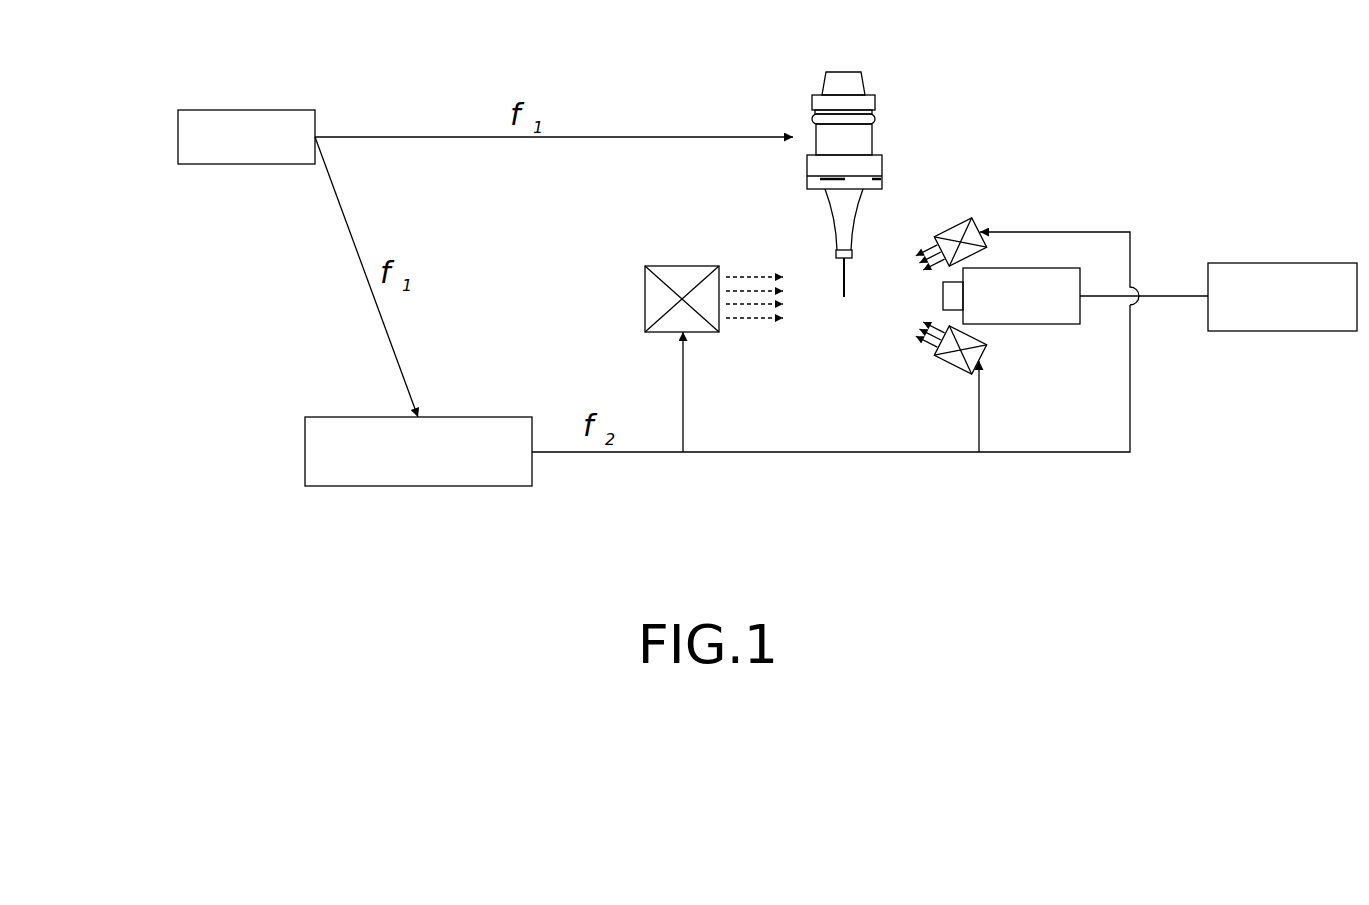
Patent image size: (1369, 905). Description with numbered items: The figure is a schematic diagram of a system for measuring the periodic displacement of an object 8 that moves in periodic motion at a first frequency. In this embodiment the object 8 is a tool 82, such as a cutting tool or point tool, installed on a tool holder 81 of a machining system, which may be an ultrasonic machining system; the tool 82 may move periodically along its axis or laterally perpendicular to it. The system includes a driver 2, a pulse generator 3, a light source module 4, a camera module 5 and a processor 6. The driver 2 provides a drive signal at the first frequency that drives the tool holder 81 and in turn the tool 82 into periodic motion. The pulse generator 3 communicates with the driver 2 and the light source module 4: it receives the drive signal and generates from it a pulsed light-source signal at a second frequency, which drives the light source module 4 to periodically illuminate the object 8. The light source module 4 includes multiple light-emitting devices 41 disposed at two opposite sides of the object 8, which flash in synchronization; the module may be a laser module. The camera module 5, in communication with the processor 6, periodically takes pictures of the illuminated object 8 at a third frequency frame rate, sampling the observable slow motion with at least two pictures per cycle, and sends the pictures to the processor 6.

The driver 2 is at (246, 109).
The pulse generator 3 is at (419, 487).
The light source module 4 is at (643, 293).
The light-emitting device 41 is at (683, 266).
The camera module 5 is at (1037, 326).
The processor 6 is at (1283, 262).
The object 8 is at (883, 226).
The tool holder 81 is at (872, 138).
The tool 82 is at (846, 282).